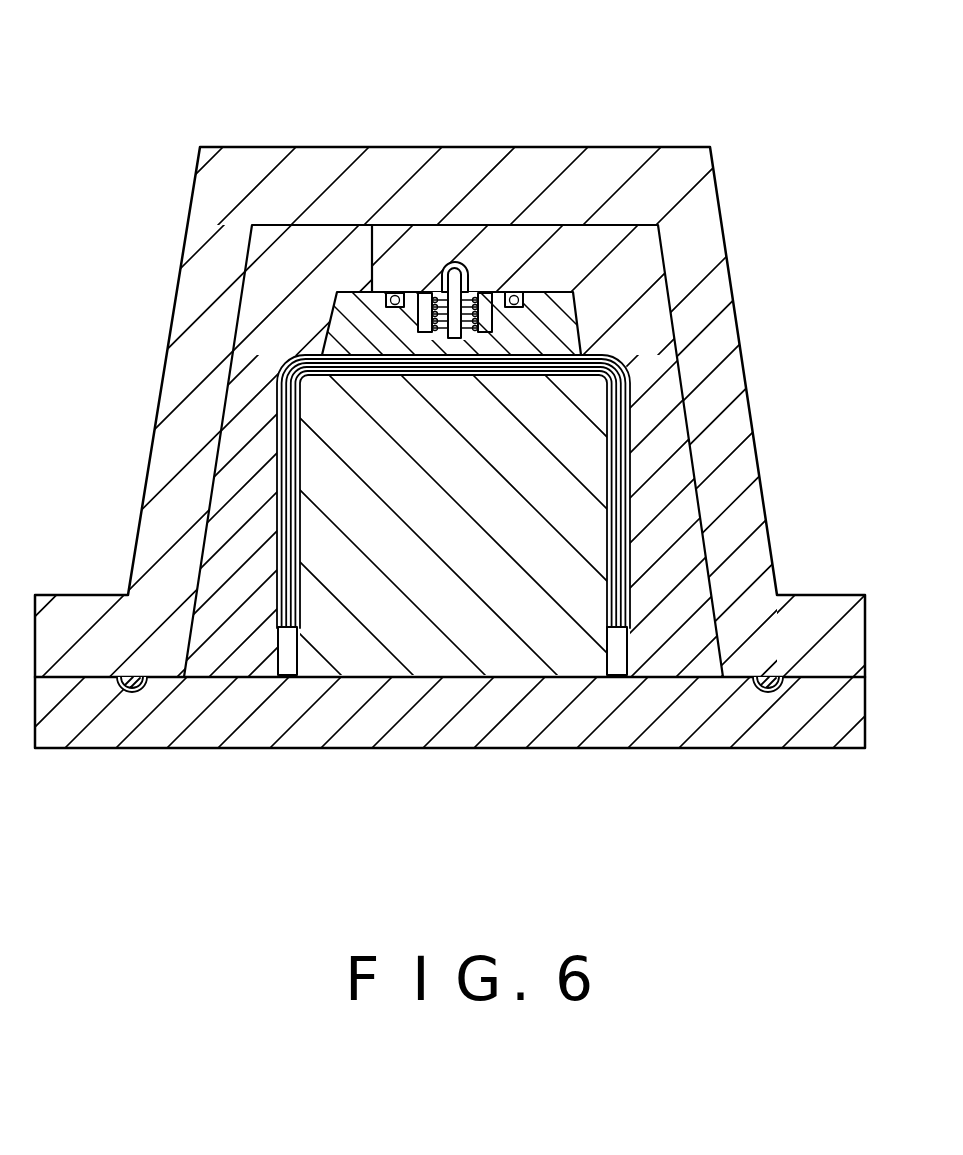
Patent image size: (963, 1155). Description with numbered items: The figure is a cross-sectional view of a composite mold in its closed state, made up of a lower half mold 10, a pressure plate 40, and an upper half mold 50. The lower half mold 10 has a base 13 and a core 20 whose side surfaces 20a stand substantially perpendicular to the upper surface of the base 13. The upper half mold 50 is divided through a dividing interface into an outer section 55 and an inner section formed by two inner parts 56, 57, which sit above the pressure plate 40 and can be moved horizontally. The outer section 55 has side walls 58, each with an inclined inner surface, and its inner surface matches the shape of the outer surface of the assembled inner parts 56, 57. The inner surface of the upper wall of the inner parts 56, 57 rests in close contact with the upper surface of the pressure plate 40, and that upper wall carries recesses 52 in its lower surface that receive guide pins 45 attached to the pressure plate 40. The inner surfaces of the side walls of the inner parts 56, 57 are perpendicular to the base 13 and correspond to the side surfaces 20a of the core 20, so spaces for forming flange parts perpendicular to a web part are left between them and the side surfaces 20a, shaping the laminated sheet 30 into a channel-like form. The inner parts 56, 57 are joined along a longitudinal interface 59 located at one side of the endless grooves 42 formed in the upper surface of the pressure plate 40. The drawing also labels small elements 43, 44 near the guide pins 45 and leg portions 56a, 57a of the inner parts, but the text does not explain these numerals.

The lower half mold 10 is at (489, 760).
The base 13 is at (758, 730).
The core 20 is at (411, 643).
The side surfaces 20a is at (607, 650).
The laminated sheet 30 is at (273, 590).
The pressure plate 40 is at (582, 338).
The endless grooves 42 is at (522, 305).
The O-ring 43 is at (512, 287).
The spring seat 44 is at (482, 290).
The guide pins 45 is at (458, 268).
The upper half mold 50 is at (718, 98).
The recesses 52 is at (452, 272).
The outer section 55 is at (695, 165).
The inner part 56 is at (575, 240).
The right housing leg 56a is at (612, 555).
The inner part 57 is at (280, 257).
The left housing leg 57a is at (298, 470).
The side walls 58 is at (250, 358).
The longitudinal interface 59 is at (367, 253).